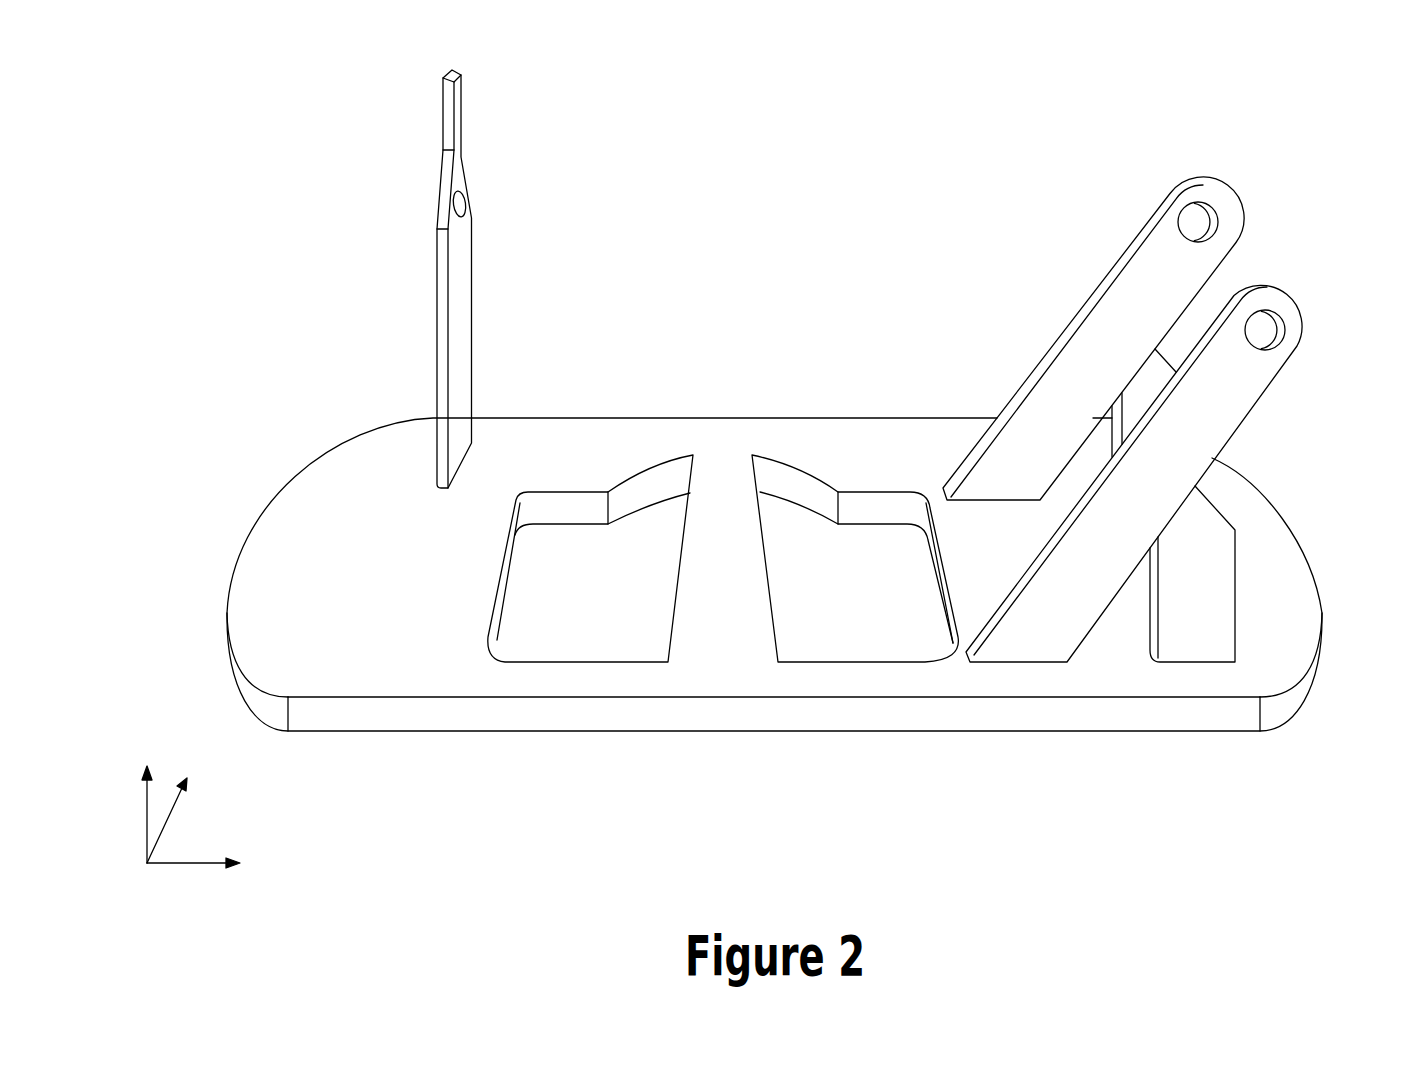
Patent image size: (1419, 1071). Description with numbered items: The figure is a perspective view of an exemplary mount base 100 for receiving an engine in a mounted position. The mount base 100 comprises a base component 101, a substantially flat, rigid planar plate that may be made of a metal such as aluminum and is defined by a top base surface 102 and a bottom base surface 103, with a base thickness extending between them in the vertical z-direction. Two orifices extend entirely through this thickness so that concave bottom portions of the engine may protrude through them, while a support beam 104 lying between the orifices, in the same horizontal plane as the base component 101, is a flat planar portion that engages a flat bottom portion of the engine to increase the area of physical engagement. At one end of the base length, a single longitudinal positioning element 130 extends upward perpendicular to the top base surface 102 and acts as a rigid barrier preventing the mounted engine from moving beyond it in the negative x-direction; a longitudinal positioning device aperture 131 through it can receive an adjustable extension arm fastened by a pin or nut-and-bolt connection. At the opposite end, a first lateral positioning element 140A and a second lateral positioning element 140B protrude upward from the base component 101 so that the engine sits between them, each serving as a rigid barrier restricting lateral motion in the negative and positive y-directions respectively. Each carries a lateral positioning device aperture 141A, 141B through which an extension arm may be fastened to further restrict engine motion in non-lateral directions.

The mount base 100 is at (240, 216).
The base component 101 is at (228, 500).
The top base surface 102 is at (333, 652).
The bottom base surface 103 is at (392, 738).
The support beam 104 is at (741, 524).
The longitudinal positioning element 130 is at (464, 384).
The longitudinal positioning device aperture 131 is at (462, 205).
The first lateral positioning element 140A is at (1272, 438).
The second lateral positioning element 140B is at (1030, 297).
The lateral positioning device aperture 141A is at (1266, 331).
The lateral positioning device aperture 141B is at (1193, 222).